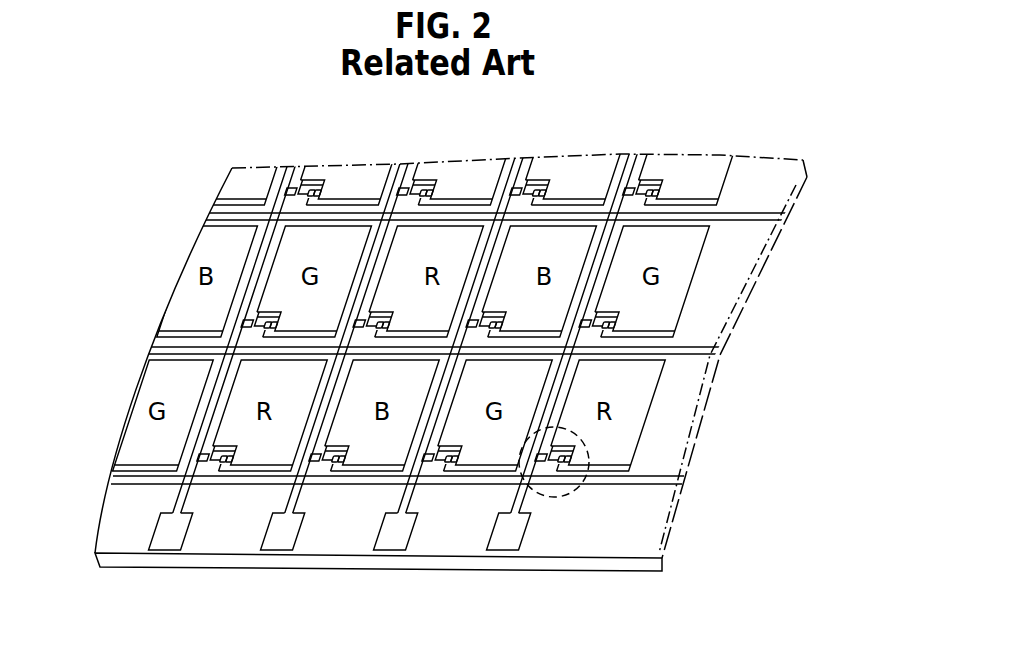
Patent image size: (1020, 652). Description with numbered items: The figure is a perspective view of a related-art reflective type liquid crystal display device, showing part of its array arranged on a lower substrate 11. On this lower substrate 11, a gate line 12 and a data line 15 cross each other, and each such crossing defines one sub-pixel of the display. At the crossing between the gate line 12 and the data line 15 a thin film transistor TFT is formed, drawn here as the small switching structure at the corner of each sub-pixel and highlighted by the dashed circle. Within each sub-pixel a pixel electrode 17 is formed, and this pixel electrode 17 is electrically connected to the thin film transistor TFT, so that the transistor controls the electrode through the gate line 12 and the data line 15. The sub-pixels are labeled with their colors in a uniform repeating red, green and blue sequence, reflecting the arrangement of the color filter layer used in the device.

The lower substrate 11 is at (626, 573).
The gate line 12 is at (641, 484).
The data line 15 is at (505, 504).
The pixel electrode 17 is at (646, 427).
The thin film transistor TFT is at (549, 497).